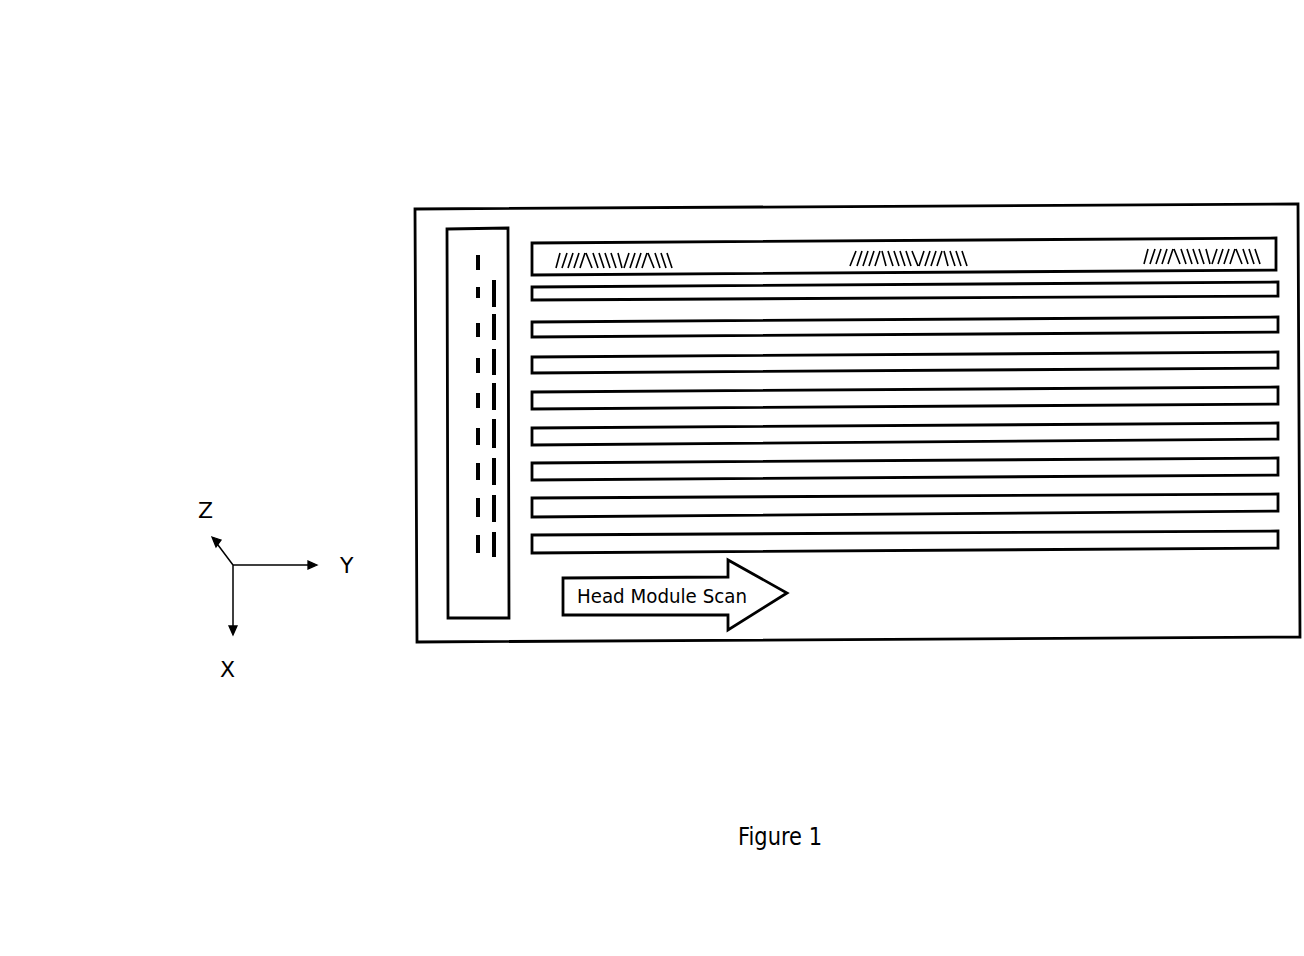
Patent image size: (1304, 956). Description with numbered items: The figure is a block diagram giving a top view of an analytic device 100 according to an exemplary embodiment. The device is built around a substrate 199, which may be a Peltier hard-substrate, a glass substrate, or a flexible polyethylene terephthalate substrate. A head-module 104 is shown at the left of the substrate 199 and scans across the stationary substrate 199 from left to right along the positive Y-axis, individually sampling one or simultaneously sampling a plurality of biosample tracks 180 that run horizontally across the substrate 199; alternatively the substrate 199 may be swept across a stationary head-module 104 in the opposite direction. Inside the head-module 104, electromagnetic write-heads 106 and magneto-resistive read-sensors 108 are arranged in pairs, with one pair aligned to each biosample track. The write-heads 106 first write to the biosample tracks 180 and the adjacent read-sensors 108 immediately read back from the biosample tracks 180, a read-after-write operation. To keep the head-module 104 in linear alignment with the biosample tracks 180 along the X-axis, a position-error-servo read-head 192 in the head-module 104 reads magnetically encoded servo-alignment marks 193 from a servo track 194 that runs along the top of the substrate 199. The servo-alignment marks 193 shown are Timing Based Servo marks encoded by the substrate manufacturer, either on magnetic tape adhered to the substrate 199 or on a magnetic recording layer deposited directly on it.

The biosample analysis system 100 is at (817, 110).
The head-module 104 is at (445, 253).
The electromagnetic write-heads 106 is at (496, 512).
The magneto-resistive read-sensors 108 is at (468, 542).
The biosample tracks 180 is at (815, 540).
The position-error-servo (PES) read-head 192 is at (482, 255).
The servo-alignment marks 193 is at (673, 253).
The servo track 194 is at (1062, 237).
The substrate 199 is at (1132, 615).